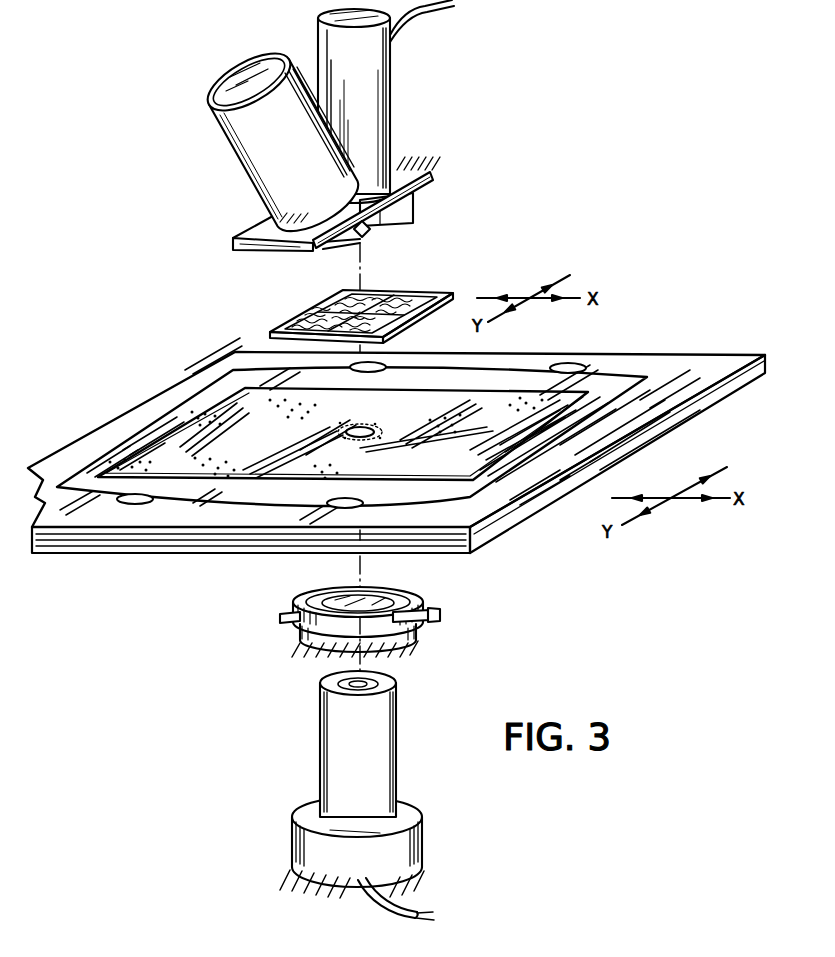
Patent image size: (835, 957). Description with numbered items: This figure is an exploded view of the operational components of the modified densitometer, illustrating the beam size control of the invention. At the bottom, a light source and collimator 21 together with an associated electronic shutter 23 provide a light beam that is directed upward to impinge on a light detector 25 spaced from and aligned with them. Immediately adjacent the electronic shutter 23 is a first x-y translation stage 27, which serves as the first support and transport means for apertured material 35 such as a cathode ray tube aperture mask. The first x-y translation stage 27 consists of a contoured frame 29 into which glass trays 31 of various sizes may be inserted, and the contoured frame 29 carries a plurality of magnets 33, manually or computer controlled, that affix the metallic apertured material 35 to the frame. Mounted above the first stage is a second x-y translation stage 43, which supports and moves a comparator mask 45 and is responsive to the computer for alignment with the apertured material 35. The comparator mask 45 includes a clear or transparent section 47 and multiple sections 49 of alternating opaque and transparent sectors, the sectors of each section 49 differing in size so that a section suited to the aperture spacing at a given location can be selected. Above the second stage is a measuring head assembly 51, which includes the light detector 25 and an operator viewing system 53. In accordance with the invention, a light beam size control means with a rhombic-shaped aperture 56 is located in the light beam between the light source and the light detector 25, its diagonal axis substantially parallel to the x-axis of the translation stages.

The light source and collimator 21 is at (327, 723).
The electronic shutter 23 is at (300, 635).
The light detector 25 is at (392, 80).
The first x-y translation stage 27 is at (396, 450).
The contoured frame 29 is at (92, 442).
The glass trays 31 is at (180, 420).
The magnets 33 is at (350, 368).
The apertured material 35 is at (483, 407).
The second x-y translation stage 43 is at (401, 280).
The comparator mask 45 is at (357, 292).
The clear or transparent section 47 is at (340, 293).
The sections of alternate opaque and transparent sectors 49 is at (307, 318).
The measuring head assembly 51 is at (352, 125).
The operator viewing system 53 is at (243, 130).
The rhombic-shaped aperture 56 is at (372, 229).